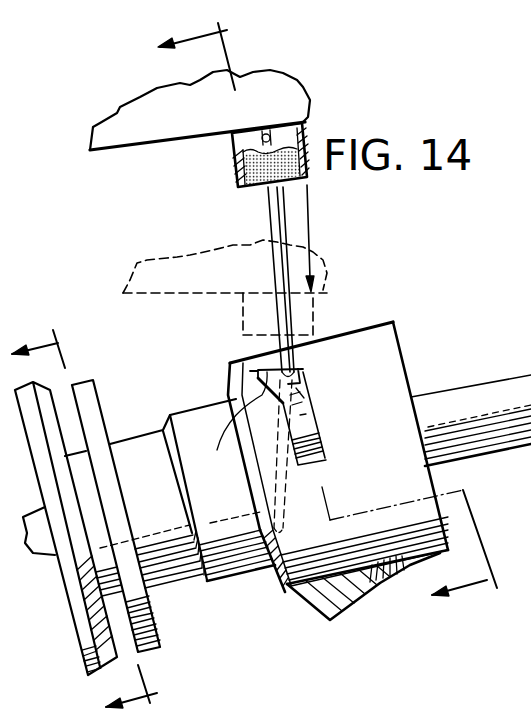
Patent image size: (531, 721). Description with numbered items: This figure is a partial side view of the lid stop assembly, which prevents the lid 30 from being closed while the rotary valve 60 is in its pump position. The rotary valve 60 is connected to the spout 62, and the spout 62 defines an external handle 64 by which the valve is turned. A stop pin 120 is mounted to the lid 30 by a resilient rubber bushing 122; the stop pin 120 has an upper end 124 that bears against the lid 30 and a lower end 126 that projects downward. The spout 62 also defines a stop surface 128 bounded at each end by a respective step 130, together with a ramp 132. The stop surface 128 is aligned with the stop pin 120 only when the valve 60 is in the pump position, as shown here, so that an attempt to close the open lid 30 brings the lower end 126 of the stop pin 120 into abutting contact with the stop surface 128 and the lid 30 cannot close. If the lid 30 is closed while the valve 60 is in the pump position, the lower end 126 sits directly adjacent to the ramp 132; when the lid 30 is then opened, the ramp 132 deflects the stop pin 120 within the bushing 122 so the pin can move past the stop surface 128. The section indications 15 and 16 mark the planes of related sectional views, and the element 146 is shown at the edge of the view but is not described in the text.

The lid 30 is at (225, 118).
The resilient rubber bushing 122 is at (250, 190).
The upper end 124 is at (265, 128).
The stop pin 120 is at (278, 220).
The stop surface 128 is at (294, 365).
The lower end 126 is at (313, 408).
The step 130 is at (251, 372).
The ramp 132 is at (232, 423).
The external handle 64 is at (502, 457).
The spout 62 is at (266, 587).
The rotary valve 60 is at (70, 621).
The bracket 146 is at (530, 693).
The section line 15- 15 is at (344, 304).
The section line 16- 16 is at (113, 517).